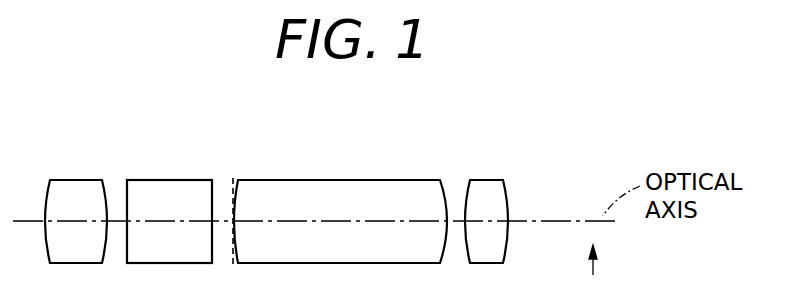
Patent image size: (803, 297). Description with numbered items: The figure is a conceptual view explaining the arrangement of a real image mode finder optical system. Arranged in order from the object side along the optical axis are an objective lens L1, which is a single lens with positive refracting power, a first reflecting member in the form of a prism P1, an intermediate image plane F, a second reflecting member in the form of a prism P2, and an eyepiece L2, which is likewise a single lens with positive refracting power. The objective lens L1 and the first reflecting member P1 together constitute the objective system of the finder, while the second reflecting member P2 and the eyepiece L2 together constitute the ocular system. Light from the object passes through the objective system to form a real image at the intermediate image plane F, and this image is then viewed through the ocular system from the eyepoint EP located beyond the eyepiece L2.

The objective lens L1 is at (78, 186).
The first reflecting member (prism) P1 is at (170, 186).
The intermediate image plane F is at (233, 178).
The second reflecting member (prism) P2 is at (345, 186).
The eyepiece L2 is at (487, 186).
The eyepoint EP is at (593, 184).